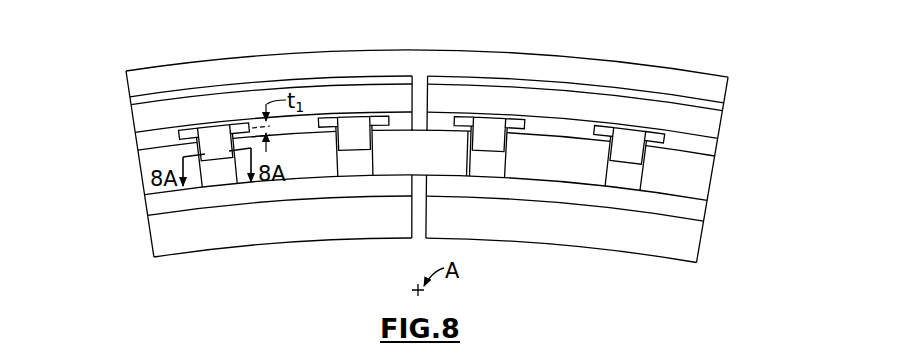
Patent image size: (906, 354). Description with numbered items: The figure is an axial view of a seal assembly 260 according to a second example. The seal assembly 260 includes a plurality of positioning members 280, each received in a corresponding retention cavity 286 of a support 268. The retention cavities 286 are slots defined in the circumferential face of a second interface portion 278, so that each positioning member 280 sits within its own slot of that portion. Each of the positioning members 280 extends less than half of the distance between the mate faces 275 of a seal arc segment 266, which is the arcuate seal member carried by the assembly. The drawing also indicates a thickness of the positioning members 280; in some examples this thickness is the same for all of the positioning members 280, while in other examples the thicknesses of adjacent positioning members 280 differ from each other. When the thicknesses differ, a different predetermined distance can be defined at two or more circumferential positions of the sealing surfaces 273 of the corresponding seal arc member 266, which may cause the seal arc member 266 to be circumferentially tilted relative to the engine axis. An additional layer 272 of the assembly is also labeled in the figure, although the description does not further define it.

The seal assembly 260 is at (125, 74).
The support 268 is at (183, 63).
The positioning members 280 is at (212, 127).
The mate faces 275 is at (420, 86).
The seal arc segment 266 is at (133, 118).
The second interface portion 278 is at (141, 191).
The inner layer 272 is at (151, 240).
The sealing surfaces 273 is at (243, 247).
The retention cavity 286 is at (231, 163).